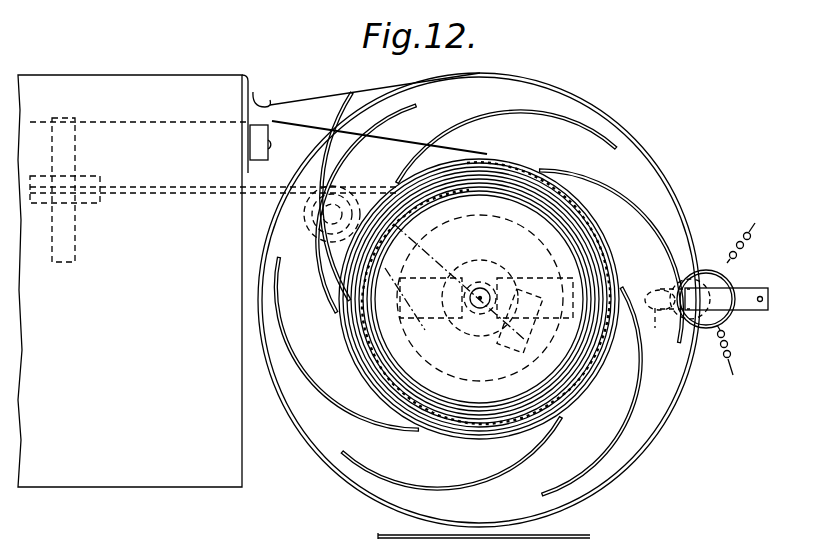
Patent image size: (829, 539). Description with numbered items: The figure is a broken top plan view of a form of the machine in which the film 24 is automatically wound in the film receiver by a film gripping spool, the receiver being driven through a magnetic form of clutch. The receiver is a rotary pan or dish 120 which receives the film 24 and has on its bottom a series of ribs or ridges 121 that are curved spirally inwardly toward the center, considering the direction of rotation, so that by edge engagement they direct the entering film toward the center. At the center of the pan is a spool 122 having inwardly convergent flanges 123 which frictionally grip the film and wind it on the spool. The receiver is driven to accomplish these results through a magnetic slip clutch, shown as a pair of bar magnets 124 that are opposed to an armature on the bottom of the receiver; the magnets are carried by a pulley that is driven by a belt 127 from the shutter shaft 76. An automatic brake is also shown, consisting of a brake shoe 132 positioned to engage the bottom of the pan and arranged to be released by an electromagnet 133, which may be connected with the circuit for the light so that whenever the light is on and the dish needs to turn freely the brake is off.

The film 24 is at (413, 148).
The shutter shaft 76 is at (78, 238).
The rotary pan or dish 120 is at (642, 150).
The ribs or ridges 121 is at (585, 176).
The spool 122 is at (480, 298).
The inwardly convergent flanges 123 is at (590, 231).
The bar magnets 124 is at (520, 274).
The belt 127 is at (262, 190).
The brake shoe 132 is at (675, 313).
The electromagnet 133 is at (730, 281).